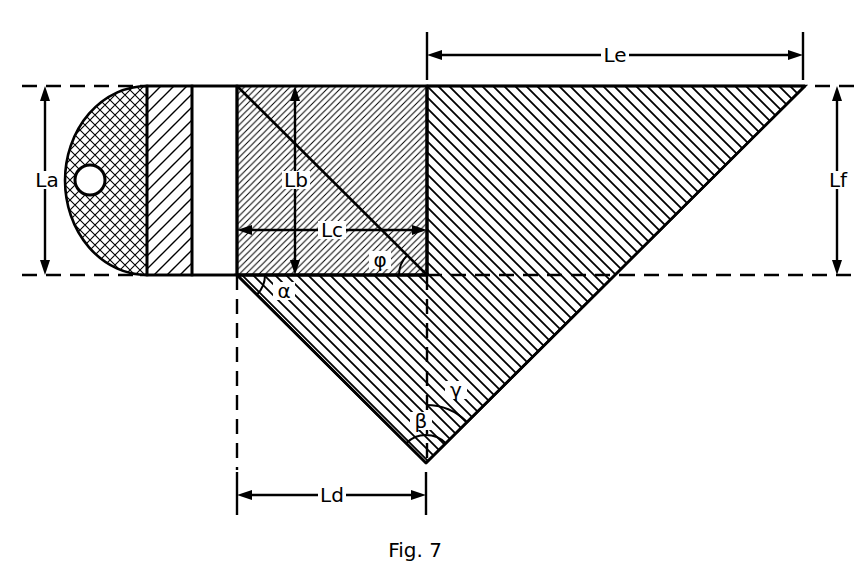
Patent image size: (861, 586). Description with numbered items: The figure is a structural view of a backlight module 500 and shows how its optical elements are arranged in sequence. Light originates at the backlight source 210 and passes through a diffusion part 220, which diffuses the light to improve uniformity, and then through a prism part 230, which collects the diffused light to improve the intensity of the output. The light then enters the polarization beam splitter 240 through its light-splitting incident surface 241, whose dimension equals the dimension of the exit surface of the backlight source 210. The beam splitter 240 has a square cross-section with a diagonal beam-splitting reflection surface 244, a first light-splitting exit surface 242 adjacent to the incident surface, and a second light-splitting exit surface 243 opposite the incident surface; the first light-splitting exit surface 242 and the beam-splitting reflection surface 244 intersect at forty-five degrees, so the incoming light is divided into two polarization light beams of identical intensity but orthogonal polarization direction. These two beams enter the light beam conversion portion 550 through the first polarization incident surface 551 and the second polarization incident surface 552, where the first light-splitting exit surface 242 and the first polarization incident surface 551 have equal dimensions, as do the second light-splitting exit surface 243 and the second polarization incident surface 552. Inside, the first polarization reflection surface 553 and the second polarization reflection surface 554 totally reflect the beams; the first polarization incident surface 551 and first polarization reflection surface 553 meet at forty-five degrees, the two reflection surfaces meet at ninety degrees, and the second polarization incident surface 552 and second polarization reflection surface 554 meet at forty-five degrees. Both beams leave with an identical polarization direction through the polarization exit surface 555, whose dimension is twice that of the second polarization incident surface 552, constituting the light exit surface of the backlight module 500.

The backlight module 500 is at (152, 52).
The backlight source 210 is at (106, 180).
The diffusion part 220 is at (169, 180).
The prism part 230 is at (214, 180).
The polarization beam splitter 240 is at (332, 180).
The light-splitting incident surface 241 is at (258, 180).
The first light-splitting exit surface 242 is at (332, 261).
The second light-splitting exit surface 243 is at (404, 180).
The beam-splitting reflection surface 244 is at (332, 180).
The light beam conversion portion 550 is at (521, 274).
The first polarization incident surface 551 is at (332, 288).
The second polarization incident surface 552 is at (448, 180).
The first polarization reflection surface 553 is at (331, 369).
The second polarization reflection surface 554 is at (615, 274).
The polarization exit surface 555 is at (616, 99).